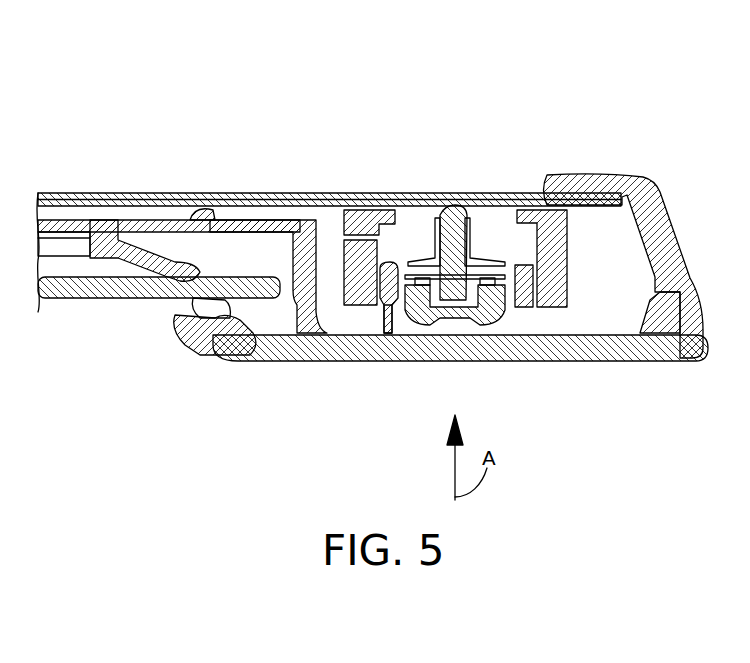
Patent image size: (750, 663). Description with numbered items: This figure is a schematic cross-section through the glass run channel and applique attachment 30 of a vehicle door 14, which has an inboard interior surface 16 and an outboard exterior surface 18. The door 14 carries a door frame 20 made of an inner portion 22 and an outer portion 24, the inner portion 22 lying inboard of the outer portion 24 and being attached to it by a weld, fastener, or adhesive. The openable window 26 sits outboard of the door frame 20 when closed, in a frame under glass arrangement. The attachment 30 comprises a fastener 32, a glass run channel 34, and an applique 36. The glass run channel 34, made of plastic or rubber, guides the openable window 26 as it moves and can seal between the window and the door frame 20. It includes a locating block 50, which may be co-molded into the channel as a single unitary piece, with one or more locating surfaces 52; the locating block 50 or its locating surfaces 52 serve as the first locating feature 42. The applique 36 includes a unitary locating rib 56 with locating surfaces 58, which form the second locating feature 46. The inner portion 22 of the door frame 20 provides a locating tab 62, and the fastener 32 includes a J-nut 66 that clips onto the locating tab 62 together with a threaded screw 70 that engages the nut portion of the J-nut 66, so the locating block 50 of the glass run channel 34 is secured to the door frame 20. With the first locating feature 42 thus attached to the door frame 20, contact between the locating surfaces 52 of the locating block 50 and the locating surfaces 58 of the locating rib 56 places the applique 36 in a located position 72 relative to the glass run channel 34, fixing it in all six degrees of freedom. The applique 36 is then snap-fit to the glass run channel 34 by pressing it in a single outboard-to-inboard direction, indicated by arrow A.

The door 14 is at (333, 88).
The interior surface 16 is at (278, 196).
The exterior surface 18 is at (85, 300).
The door frame 20 is at (128, 193).
The inner portion 22 is at (388, 255).
The outer portion 24 is at (648, 209).
The openable window 26 is at (152, 300).
The glass run channel and applique attachment 30 is at (468, 269).
The fastener 32 is at (460, 205).
The glass run channel 34 is at (176, 215).
The applique 36 is at (640, 346).
The first locating feature 42 is at (362, 220).
The second locating feature 46 is at (517, 322).
The locating block 50 is at (347, 258).
The locating surfaces 52 is at (435, 250).
The locating rib 56 is at (381, 333).
The locating surfaces 58 is at (360, 340).
The locating tab 62 is at (400, 305).
The J-nut 66 is at (475, 256).
The threaded screw 70 is at (487, 322).
The located position 72 is at (232, 372).